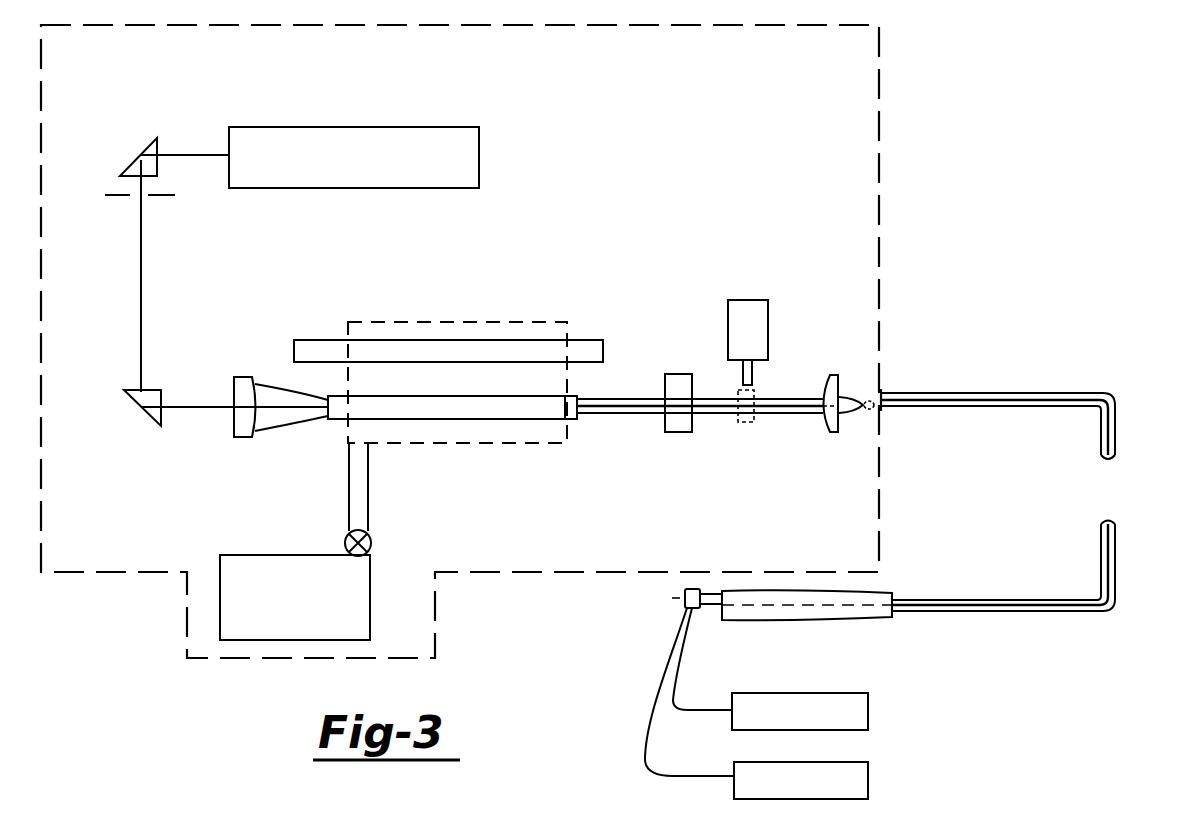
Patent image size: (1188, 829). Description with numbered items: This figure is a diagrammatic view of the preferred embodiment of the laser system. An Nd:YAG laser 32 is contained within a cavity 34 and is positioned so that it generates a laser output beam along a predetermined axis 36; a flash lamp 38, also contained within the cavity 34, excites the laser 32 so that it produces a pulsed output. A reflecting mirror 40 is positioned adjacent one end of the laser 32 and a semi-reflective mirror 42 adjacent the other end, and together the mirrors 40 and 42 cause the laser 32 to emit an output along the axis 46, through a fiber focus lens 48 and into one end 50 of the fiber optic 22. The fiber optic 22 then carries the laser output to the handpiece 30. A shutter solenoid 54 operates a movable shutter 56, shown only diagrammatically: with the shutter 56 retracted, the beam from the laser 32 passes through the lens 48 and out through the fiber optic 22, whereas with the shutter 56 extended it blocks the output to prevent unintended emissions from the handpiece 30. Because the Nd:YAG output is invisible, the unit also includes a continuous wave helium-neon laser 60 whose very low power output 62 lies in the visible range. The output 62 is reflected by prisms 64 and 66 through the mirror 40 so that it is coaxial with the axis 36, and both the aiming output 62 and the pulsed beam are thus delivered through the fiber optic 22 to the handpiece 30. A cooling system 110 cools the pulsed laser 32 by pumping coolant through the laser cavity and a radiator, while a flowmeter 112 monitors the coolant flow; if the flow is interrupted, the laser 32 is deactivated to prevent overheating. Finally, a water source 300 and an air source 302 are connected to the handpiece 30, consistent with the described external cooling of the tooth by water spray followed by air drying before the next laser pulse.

The fiber optic 22 is at (1118, 448).
The handpiece 30 is at (792, 621).
The Nd:YAG laser 32 is at (437, 420).
The cavity 34 is at (457, 320).
The predetermined axis 36 is at (612, 415).
The flash lamp 38 is at (627, 303).
The reflecting mirror 40 is at (242, 433).
The semi-reflective mirror 42 is at (681, 374).
The axis 46 is at (788, 413).
The fiber focus lens 48 is at (860, 333).
The end of the fiber optic 50 is at (881, 392).
The shutter solenoid 54 is at (738, 300).
The movable shutter 56 is at (750, 373).
The continuous wave laser 60 is at (430, 127).
The output from the HeNe laser 62 is at (183, 155).
The prism 64 is at (141, 161).
The prism 66 is at (140, 410).
The cooling system 110 is at (247, 555).
The flowmeter 112 is at (372, 545).
The water supply 300 is at (868, 710).
The air supply 302 is at (868, 790).